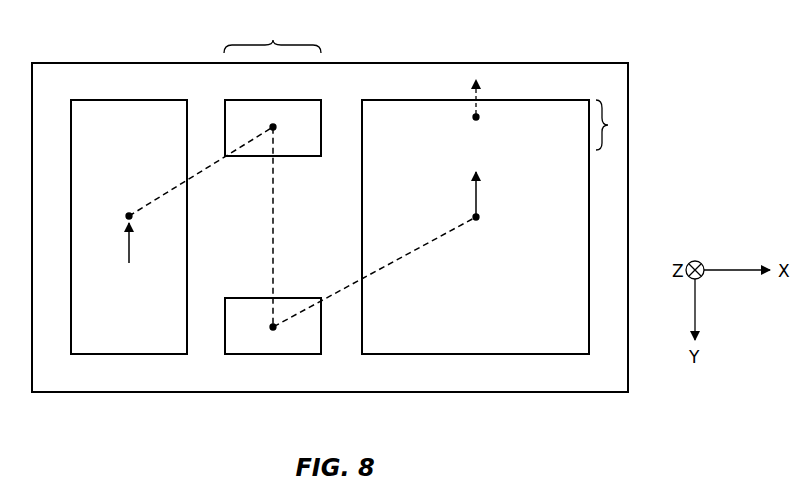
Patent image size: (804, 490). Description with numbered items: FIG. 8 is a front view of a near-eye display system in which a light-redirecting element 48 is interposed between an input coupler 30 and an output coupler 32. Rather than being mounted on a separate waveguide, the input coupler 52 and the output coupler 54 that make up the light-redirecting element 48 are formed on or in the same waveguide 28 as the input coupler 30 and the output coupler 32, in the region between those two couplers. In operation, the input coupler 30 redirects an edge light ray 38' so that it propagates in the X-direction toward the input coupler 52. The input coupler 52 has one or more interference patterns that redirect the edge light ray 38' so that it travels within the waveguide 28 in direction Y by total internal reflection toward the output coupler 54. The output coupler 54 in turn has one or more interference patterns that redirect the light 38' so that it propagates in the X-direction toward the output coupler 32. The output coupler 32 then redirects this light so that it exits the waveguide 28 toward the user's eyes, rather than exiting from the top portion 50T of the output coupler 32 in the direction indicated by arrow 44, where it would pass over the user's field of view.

The waveguide 28 is at (550, 75).
The input coupler 30 is at (104, 100).
The output coupler 32 is at (401, 100).
The light-redirecting element 48 is at (272, 35).
The input coupler 52 is at (297, 157).
The output coupler 54 is at (255, 355).
The arrow 44 is at (480, 88).
The edge light ray 38' is at (511, 194).
The top portion 50T is at (608, 125).